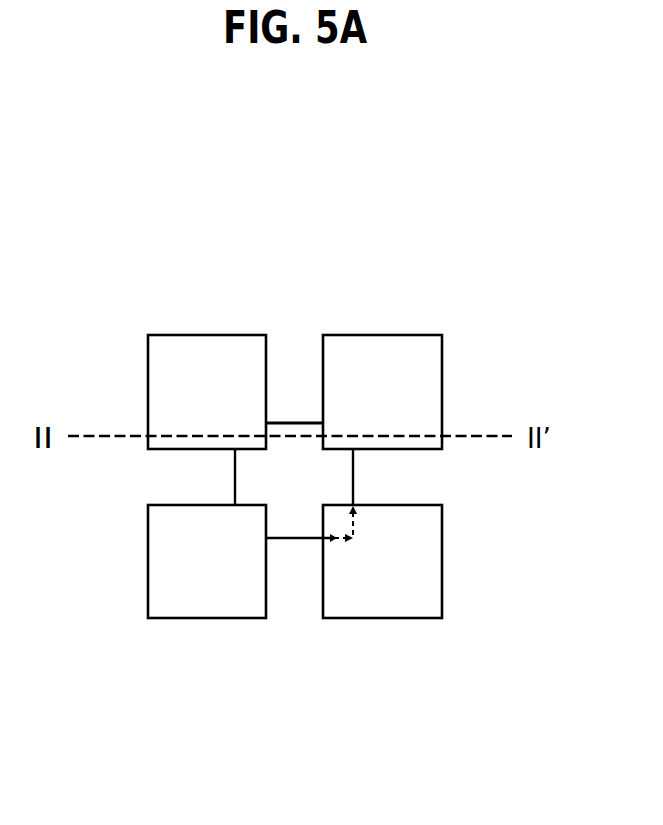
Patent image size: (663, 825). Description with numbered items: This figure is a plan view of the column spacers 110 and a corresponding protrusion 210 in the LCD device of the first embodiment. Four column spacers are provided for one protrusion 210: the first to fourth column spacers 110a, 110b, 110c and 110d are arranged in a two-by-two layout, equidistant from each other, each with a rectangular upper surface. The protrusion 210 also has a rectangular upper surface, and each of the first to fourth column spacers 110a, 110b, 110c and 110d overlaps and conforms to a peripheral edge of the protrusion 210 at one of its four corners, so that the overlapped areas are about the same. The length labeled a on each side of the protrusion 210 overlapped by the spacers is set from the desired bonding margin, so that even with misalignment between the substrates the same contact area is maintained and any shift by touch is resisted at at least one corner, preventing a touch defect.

The column spacers 110 is at (423, 243).
The first column spacer 110a is at (200, 348).
The second column spacer 110b is at (379, 348).
The third column spacer 110c is at (200, 605).
The fourth column spacer 110d is at (380, 605).
The protrusion 210 is at (335, 484).